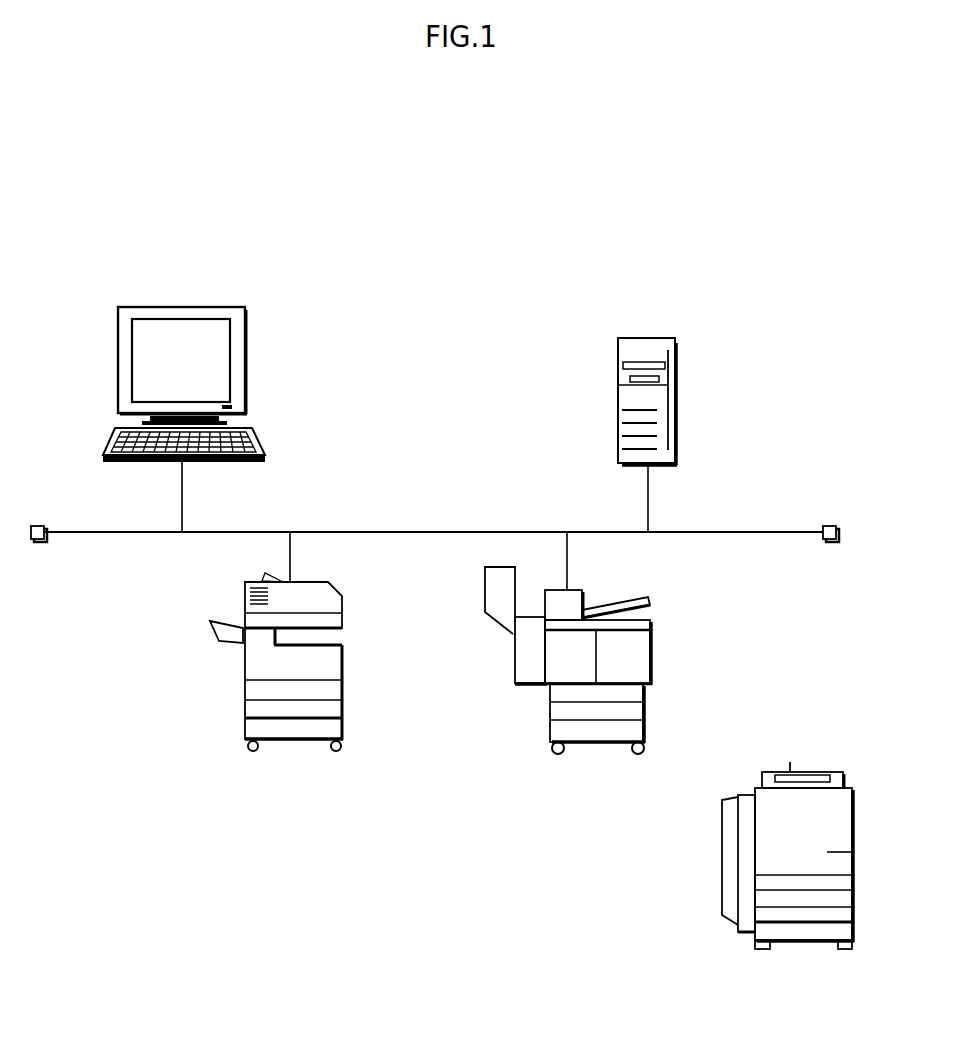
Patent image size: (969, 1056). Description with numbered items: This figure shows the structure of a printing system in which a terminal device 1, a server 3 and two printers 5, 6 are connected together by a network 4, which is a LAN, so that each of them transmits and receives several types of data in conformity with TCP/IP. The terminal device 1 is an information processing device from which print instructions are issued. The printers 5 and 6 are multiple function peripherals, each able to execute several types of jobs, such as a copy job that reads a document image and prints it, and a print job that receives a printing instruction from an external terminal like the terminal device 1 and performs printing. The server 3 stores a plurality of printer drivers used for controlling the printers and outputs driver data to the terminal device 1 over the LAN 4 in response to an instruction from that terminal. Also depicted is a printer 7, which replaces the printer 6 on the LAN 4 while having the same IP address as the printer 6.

The terminal device 1 is at (187, 306).
The server 3 is at (640, 338).
The network 4 is at (763, 532).
The printer 5 is at (342, 605).
The printer 6 is at (652, 650).
The printer 7 is at (853, 825).